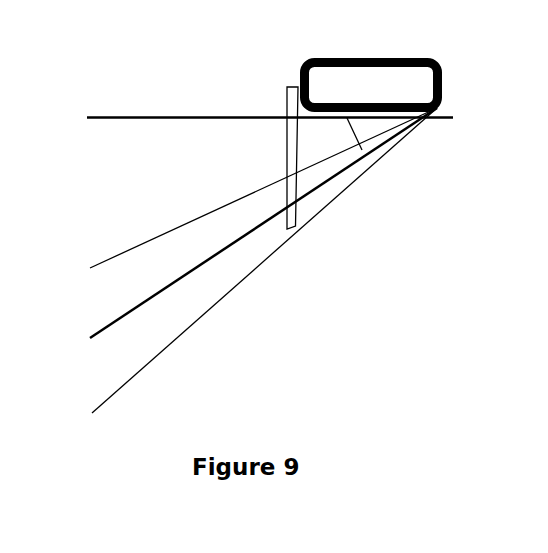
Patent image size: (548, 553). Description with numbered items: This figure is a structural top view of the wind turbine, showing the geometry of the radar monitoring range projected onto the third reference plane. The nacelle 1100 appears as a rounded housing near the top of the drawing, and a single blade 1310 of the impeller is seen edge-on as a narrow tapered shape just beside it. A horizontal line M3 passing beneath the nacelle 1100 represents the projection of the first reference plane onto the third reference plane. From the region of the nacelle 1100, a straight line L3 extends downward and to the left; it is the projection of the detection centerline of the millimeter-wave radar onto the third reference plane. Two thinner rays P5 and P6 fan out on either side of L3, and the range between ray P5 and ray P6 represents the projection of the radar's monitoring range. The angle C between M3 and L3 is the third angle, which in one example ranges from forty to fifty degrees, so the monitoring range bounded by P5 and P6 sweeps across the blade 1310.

The nacelle 1100 is at (348, 58).
The projection of the first reference plane M3 is at (250, 120).
The blade 1310 is at (287, 140).
The third angle C is at (342, 134).
The ray P5 is at (247, 197).
The straight line L3 is at (247, 234).
The ray P6 is at (252, 275).